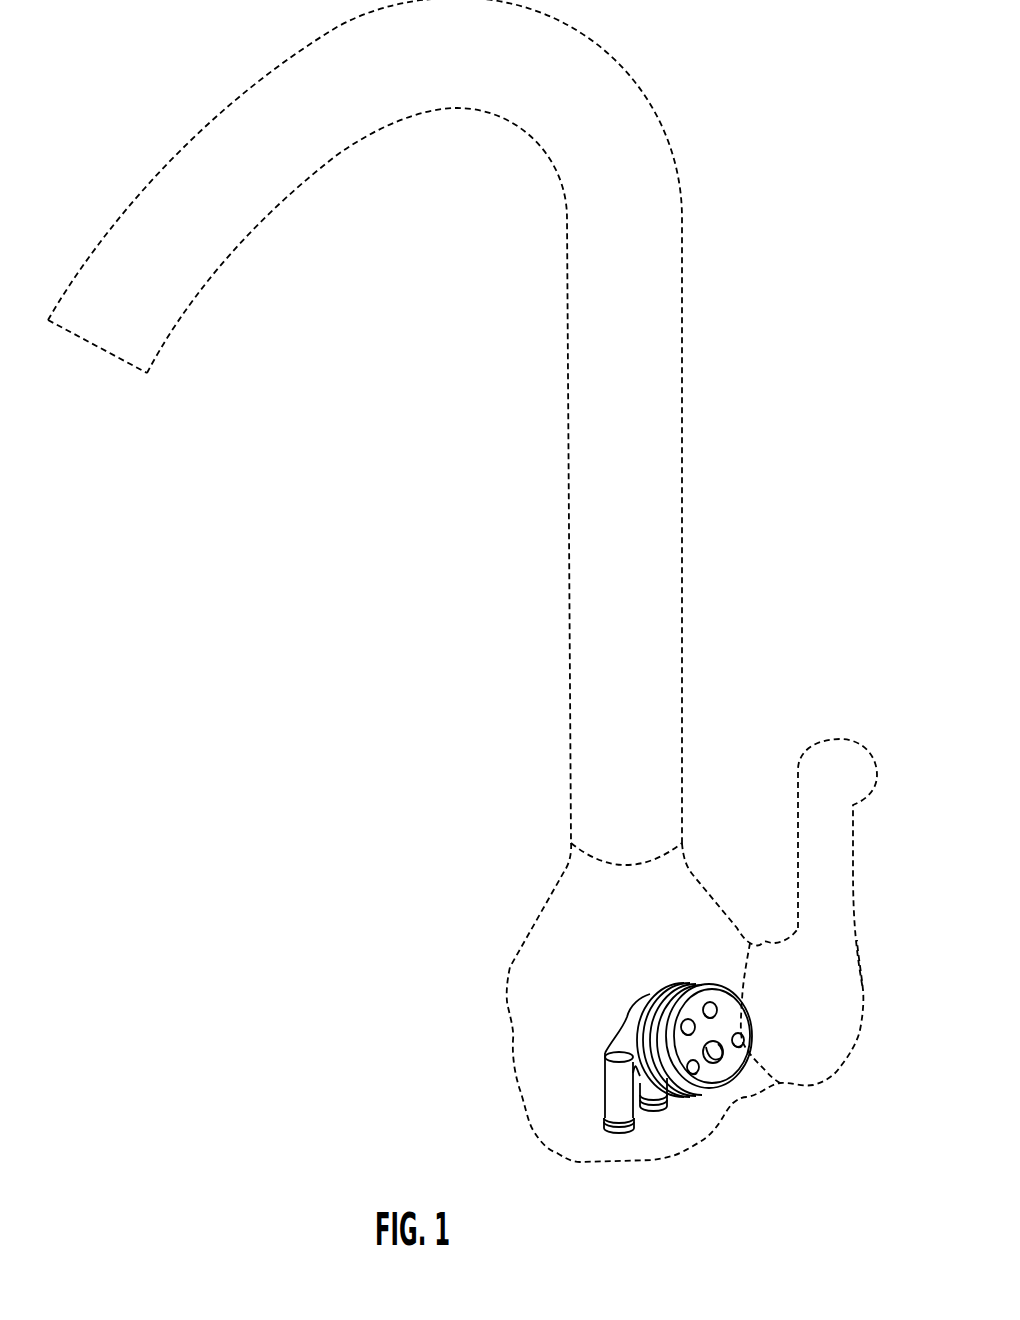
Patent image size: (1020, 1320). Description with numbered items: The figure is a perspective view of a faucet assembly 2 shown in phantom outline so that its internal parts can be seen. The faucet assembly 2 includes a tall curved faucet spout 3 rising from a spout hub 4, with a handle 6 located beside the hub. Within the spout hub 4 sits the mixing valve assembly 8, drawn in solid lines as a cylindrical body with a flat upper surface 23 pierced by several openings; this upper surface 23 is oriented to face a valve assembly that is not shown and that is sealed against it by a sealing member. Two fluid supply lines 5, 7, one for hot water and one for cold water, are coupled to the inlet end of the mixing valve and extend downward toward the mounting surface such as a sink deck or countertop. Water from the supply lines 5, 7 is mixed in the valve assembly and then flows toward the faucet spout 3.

The faucet assembly 2 is at (454, 710).
The faucet spout 3 is at (593, 392).
The spout hub 4 is at (543, 1037).
The supply line 5 is at (617, 1098).
The handle 6 is at (821, 886).
The supply line 7 is at (653, 1093).
The mixing valve assembly 8 is at (594, 999).
The upper surface 23 is at (695, 998).